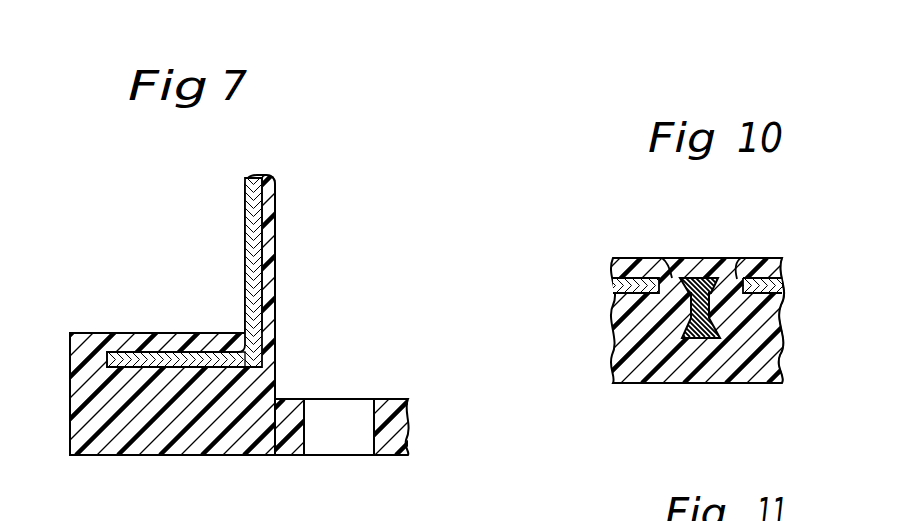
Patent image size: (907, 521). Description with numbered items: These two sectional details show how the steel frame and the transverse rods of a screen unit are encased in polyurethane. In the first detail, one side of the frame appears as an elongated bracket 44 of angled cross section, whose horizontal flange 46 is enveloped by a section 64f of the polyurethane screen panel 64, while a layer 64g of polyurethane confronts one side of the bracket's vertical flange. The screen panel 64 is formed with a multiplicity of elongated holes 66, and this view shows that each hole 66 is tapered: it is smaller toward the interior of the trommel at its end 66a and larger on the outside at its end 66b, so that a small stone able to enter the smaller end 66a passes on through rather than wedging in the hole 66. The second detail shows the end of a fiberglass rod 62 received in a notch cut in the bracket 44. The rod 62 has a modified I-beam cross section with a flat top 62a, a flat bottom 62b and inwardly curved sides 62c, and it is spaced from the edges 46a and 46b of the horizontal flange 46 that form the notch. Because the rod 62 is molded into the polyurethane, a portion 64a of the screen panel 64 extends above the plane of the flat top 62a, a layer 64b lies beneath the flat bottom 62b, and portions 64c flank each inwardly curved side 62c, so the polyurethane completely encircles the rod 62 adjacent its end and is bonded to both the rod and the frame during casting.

In FIG. 7, the bracket 44 is at (238, 246).
In FIG. 7, the horizontal flange 46 is at (138, 352).
In FIG. 10, the horizontal flange 46 is at (768, 288).
In FIG. 10, the flange edge 46a is at (662, 258).
In FIG. 10, the flange edge 46b is at (741, 258).
In FIG. 10, the fiberglass rod 62 is at (684, 266).
In FIG. 10, the flat top 62a is at (713, 274).
In FIG. 10, the flat bottom 62b is at (668, 350).
In FIG. 10, the inwardly curved side 62c is at (690, 312).
In FIG. 7, the screen panel 64 is at (113, 424).
In FIG. 10, the screen panel 64 is at (789, 380).
In FIG. 10, the screen panel portion 64a is at (698, 258).
In FIG. 10, the polyurethane layer 64b is at (718, 360).
In FIG. 10, the polyurethane portion 64c is at (727, 312).
In FIG. 7, the polyurethane section 64f is at (182, 340).
In FIG. 7, the polyurethane layer 64g is at (276, 199).
In FIG. 7, the hole 66 is at (360, 425).
In FIG. 7, the smaller hole end 66a is at (348, 456).
In FIG. 7, the larger hole end 66b is at (340, 398).